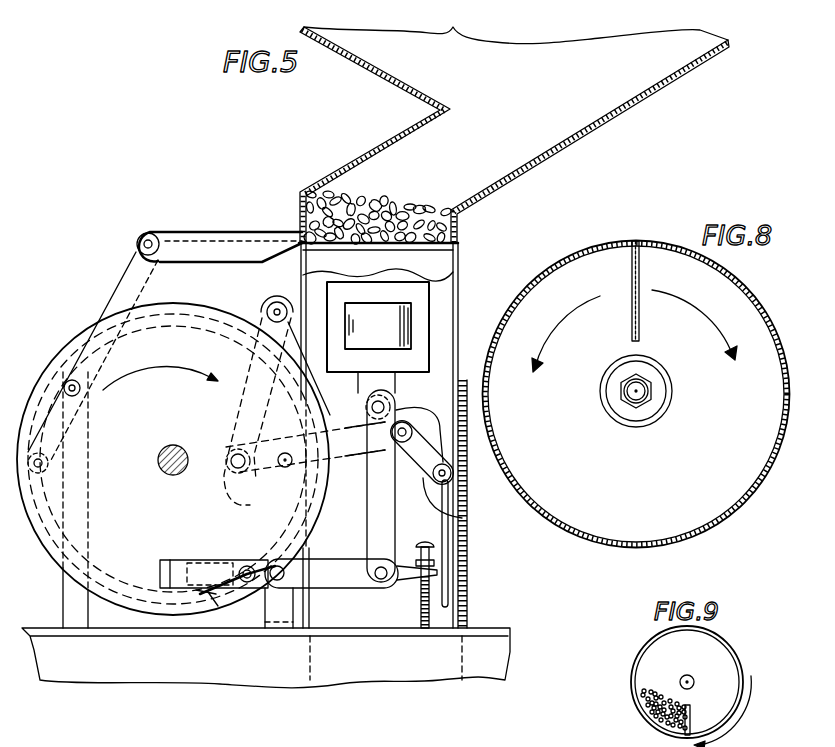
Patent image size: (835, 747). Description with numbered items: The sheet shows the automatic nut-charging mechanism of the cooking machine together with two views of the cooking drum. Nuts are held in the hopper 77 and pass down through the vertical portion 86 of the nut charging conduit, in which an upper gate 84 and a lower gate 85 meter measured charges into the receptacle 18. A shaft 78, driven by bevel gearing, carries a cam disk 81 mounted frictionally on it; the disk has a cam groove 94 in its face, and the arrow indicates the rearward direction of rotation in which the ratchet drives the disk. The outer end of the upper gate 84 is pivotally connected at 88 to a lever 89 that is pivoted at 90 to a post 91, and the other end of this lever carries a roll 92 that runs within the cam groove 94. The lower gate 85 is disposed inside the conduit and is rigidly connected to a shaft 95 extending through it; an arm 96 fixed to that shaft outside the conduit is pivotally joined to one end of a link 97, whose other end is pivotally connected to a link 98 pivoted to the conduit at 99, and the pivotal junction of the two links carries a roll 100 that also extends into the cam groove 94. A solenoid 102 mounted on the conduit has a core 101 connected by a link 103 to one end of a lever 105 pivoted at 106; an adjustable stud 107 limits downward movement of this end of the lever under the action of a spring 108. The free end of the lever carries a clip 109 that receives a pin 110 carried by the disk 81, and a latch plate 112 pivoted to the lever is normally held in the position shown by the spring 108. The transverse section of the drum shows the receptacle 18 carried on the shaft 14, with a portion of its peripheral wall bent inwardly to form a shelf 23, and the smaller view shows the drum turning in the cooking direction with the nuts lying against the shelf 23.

In FIG. 5, the hopper 77 is at (514, 135).
In FIG. 5, the upper gate 84 is at (270, 238).
In FIG. 5, the pivotal connection 88 is at (153, 240).
In FIG. 5, the lever 89 is at (126, 273).
In FIG. 5, the cam disk 81 is at (50, 554).
In FIG. 5, the cam groove 94 is at (214, 326).
In FIG. 5, the shaft 78 is at (178, 452).
In FIG. 5, the pivot 90 is at (160, 374).
In FIG. 5, the roll 92 is at (48, 463).
In FIG. 5, the post 91 is at (70, 596).
In FIG. 5, the pivot 99 is at (279, 302).
In FIG. 5, the link 98 is at (238, 397).
In FIG. 5, the roll 100 is at (234, 466).
In FIG. 5, the link 97 is at (347, 452).
In FIG. 5, the pin 110 is at (285, 468).
In FIG. 5, the vertical portion of the nut charging conduit 86 is at (445, 290).
In FIG. 5, the solenoid 102 is at (403, 323).
In FIG. 5, the core 101 is at (388, 390).
In FIG. 5, the link 103 is at (375, 506).
In FIG. 5, the arm 96 is at (430, 459).
In FIG. 5, the shaft 95 is at (452, 475).
In FIG. 5, the lower gate 85 is at (455, 563).
In FIG. 5, the adjustable stud 107 is at (421, 600).
In FIG. 5, the lever 105 is at (331, 583).
In FIG. 5, the pivot 106 is at (282, 556).
In FIG. 5, the clip 109 is at (176, 560).
In FIG. 5, the latch plate 112 is at (219, 560).
In FIG. 5, the spring 108 is at (226, 595).
In FIG. 8, the receptacle 18 is at (662, 542).
In FIG. 9, the receptacle 18 is at (736, 662).
In FIG. 8, the shelf 23 is at (632, 327).
In FIG. 9, the shelf 23 is at (692, 712).
In FIG. 8, the shaft 14 is at (650, 396).